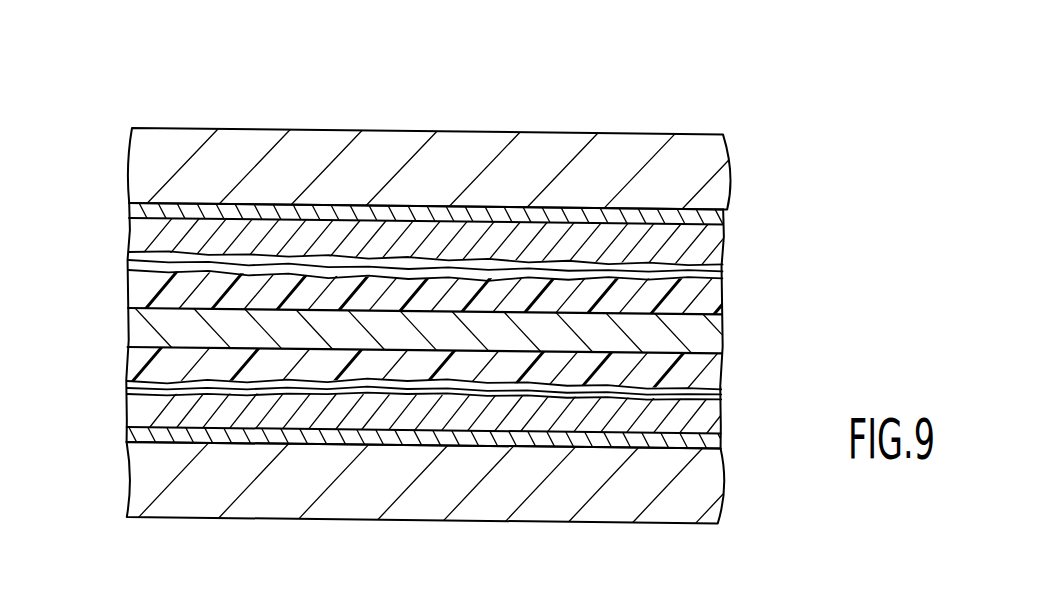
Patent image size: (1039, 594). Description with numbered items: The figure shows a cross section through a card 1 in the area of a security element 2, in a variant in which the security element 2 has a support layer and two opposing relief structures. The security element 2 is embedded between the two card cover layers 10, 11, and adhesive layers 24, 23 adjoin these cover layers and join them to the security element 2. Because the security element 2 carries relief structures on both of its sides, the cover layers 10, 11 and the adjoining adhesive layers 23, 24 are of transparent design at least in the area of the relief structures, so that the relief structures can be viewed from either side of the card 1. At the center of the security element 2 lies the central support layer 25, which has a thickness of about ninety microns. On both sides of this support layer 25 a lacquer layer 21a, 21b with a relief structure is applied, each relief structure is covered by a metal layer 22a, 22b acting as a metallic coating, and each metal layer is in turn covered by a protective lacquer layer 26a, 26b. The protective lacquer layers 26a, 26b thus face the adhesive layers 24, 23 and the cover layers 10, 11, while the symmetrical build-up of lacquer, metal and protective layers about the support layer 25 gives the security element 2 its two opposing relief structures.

The card 1 is at (623, 103).
The security element 2 is at (738, 215).
The card cover layer 10 is at (150, 167).
The card cover layer 11 is at (158, 477).
The adhesive layer 24 is at (128, 207).
The adhesive layer 23 is at (140, 440).
The protective lacquer layer 26a is at (163, 237).
The protective lacquer layer 26b is at (157, 407).
The metal layer 22a is at (133, 260).
The metal layer 22b is at (133, 394).
The lacquer layer with relief structure 21a is at (147, 288).
The lacquer layer with relief structure 21b is at (147, 358).
The central support layer 25 is at (147, 327).